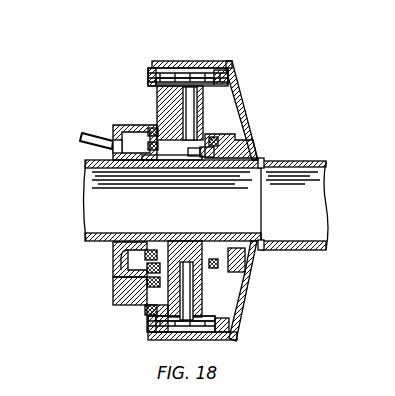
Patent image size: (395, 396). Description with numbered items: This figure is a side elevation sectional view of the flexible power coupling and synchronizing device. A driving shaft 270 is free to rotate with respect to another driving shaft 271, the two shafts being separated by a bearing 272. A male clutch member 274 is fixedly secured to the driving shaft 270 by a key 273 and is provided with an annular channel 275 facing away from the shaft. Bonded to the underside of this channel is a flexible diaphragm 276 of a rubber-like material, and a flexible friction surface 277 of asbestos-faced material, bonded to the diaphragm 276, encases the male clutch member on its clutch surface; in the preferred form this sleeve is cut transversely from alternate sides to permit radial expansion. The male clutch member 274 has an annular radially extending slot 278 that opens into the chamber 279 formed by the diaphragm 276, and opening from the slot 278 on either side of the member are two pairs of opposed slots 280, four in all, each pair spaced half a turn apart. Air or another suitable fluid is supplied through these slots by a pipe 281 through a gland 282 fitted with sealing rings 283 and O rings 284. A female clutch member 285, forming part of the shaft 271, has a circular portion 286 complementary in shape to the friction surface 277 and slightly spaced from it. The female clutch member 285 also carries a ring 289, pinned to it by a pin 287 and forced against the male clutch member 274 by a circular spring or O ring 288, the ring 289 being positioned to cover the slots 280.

The driving shaft 270 is at (85, 237).
The driving shaft 271 is at (302, 163).
The bearing 272 is at (263, 165).
The key 273 is at (181, 162).
The male clutch member 274 is at (172, 108).
The annular channel 275 is at (150, 72).
The flexible diaphragm 276 is at (158, 66).
The flexible friction surface 277 is at (212, 72).
The annular radially extending slot 278 is at (186, 125).
The chamber 279 is at (152, 81).
The opposed slots 280 is at (195, 160).
The pipe 281 is at (80, 142).
The gland 282 is at (120, 255).
The sealing rings 283 is at (147, 276).
The O rings 284 is at (121, 142).
The female clutch member 285 is at (240, 118).
The circular portion 286 is at (197, 70).
The pin 287 is at (208, 152).
The circular spring or O ring 288 is at (214, 157).
The ring 289 is at (216, 140).